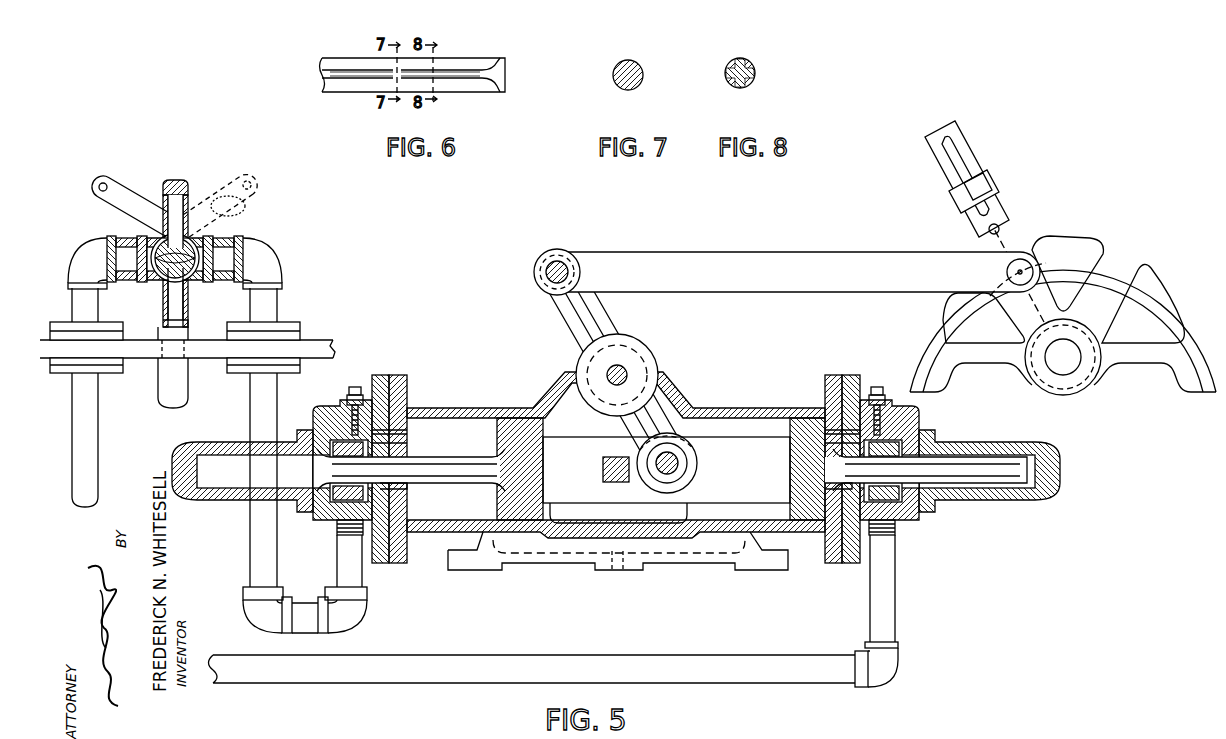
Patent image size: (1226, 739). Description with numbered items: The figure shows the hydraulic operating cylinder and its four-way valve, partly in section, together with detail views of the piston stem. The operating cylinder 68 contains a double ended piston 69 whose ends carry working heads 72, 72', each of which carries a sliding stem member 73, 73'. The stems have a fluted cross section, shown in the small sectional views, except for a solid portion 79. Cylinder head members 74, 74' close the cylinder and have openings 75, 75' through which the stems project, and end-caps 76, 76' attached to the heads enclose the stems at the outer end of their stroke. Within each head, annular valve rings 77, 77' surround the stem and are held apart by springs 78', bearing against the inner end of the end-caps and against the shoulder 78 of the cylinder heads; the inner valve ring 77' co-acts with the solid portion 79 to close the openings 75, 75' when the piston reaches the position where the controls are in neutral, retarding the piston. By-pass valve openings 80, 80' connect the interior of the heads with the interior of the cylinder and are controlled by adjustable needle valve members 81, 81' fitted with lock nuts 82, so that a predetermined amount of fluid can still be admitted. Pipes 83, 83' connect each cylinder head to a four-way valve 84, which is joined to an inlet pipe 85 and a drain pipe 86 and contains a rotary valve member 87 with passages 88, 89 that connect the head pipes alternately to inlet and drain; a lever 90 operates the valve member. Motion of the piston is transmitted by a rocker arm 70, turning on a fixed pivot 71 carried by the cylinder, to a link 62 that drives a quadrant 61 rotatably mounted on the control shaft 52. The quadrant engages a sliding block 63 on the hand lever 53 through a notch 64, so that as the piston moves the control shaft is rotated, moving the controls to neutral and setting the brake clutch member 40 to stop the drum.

In FIG. 5, the brake clutch member 40 is at (135, 206).
In FIG. 5, the control shaft 52 is at (1063, 357).
In FIG. 5, the hand lever 53 is at (1003, 193).
In FIG. 5, the quadrant 61 is at (1063, 314).
In FIG. 5, the link 62 is at (790, 272).
In FIG. 5, the sliding block 63 is at (1002, 213).
In FIG. 5, the notch 64 is at (1000, 230).
In FIG. 5, the operating cylinder 68 is at (445, 410).
In FIG. 5, the double ended piston 69 is at (666, 470).
In FIG. 5, the rocker arm 70 is at (620, 377).
In FIG. 5, the fixed pivot 71 is at (630, 378).
In FIG. 5, the working head 72 is at (536, 469).
In FIG. 5, the working head 72' is at (785, 469).
In FIG. 6, the sliding stem member 73 is at (413, 63).
In FIG. 8, the sliding stem member 73 is at (752, 62).
In FIG. 5, the sliding stem member 73 is at (411, 480).
In FIG. 5, the sliding stem member 73' is at (926, 455).
In FIG. 5, the cylinder head member 74 is at (386, 484).
In FIG. 5, the cylinder head member 74' is at (842, 486).
In FIG. 5, the opening 75 is at (406, 493).
In FIG. 5, the opening 75' is at (812, 518).
In FIG. 5, the end-cap 76 is at (242, 468).
In FIG. 5, the end-cap 76' is at (989, 463).
In FIG. 5, the annular valve ring 77 is at (590, 480).
In FIG. 5, the inner valve ring 77' is at (597, 491).
In FIG. 5, the shoulder 78 is at (830, 499).
In FIG. 5, the spring 78' is at (555, 485).
In FIG. 6, the solid portion 79 is at (393, 79).
In FIG. 7, the solid portion 79 is at (640, 67).
In FIG. 5, the solid portion 79 is at (425, 465).
In FIG. 5, the by-pass valve opening 80 is at (402, 444).
In FIG. 5, the by-pass valve opening 80' is at (895, 425).
In FIG. 5, the adjustable needle valve member 81 is at (401, 430).
In FIG. 5, the adjustable needle valve member 81' is at (886, 414).
In FIG. 5, the lock nut 82 is at (348, 395).
In FIG. 5, the pipe 83 is at (203, 460).
In FIG. 5, the pipe 83' is at (499, 487).
In FIG. 5, the four-way valve 84 is at (191, 229).
In FIG. 5, the inlet pipe 85 is at (171, 182).
In FIG. 5, the drain pipe 86 is at (173, 367).
In FIG. 5, the rotary valve member 87 is at (236, 243).
In FIG. 5, the passage 88 is at (165, 262).
In FIG. 5, the passage 89 is at (187, 273).
In FIG. 5, the lever 90 is at (215, 207).